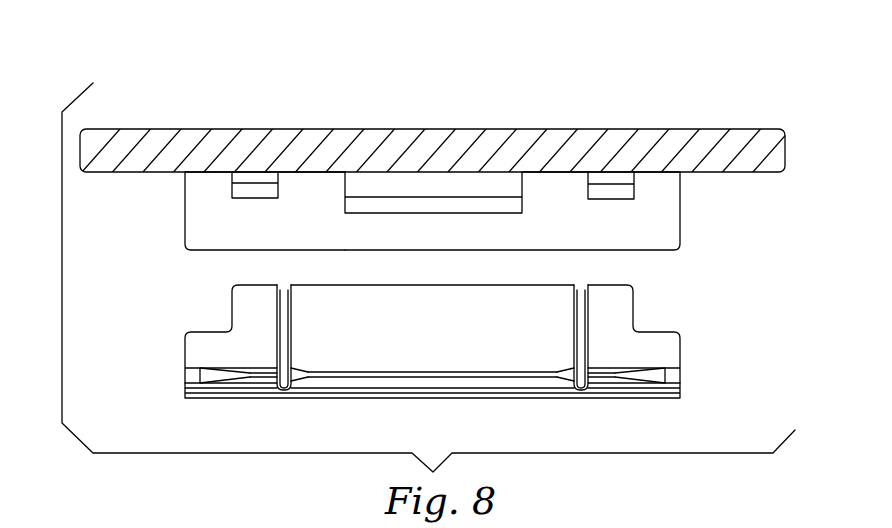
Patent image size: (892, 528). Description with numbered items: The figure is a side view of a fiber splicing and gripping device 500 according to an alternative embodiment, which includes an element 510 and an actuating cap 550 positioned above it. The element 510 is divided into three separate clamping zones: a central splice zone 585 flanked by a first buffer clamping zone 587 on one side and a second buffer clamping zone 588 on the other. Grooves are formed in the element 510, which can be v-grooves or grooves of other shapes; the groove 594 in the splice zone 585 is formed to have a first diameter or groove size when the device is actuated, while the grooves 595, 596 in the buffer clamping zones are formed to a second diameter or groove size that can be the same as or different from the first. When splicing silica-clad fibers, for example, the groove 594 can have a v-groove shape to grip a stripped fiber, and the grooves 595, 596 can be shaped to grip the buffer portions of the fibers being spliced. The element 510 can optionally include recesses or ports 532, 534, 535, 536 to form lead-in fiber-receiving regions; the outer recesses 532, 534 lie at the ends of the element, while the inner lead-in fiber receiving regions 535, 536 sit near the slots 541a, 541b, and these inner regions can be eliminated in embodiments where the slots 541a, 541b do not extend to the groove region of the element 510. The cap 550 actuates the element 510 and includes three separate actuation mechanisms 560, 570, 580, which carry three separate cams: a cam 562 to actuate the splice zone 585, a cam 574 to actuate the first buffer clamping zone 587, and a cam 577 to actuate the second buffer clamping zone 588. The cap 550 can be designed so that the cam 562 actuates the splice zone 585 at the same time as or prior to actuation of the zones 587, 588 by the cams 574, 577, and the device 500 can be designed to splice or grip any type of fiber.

The fiber splicing and gripping device 500 is at (610, 90).
The element 510 is at (220, 399).
The recess/port 532 is at (203, 401).
The recess/port 534 is at (665, 396).
The lead-in fiber receiving region 535 is at (307, 379).
The lead-in fiber receiving region 536 is at (563, 379).
The slot 541a is at (284, 290).
The slot 541b is at (581, 290).
The actuating cap 550 is at (427, 142).
The actuation mechanism 560 is at (456, 174).
The cam 562 is at (462, 180).
The actuation mechanism 570 is at (232, 211).
The cam 574 is at (235, 190).
The cam 577 is at (623, 198).
The actuation mechanism 580 is at (547, 211).
The splice zone 585 is at (443, 364).
The first buffer clamping zone 587 is at (272, 356).
The second buffer clamping zone 588 is at (639, 356).
The groove 594 is at (440, 378).
The groove 595 is at (262, 379).
The groove 596 is at (605, 379).